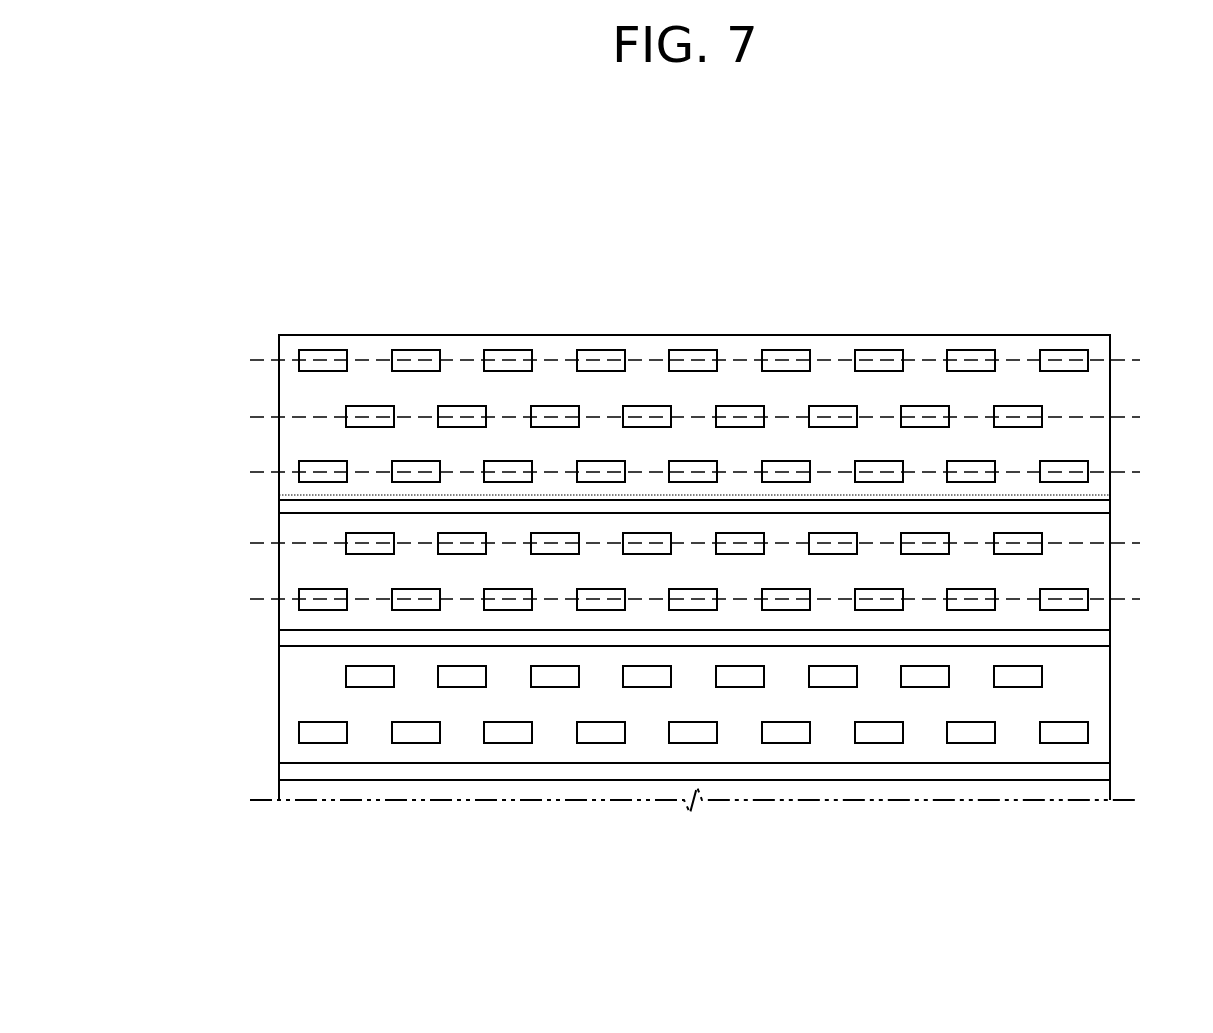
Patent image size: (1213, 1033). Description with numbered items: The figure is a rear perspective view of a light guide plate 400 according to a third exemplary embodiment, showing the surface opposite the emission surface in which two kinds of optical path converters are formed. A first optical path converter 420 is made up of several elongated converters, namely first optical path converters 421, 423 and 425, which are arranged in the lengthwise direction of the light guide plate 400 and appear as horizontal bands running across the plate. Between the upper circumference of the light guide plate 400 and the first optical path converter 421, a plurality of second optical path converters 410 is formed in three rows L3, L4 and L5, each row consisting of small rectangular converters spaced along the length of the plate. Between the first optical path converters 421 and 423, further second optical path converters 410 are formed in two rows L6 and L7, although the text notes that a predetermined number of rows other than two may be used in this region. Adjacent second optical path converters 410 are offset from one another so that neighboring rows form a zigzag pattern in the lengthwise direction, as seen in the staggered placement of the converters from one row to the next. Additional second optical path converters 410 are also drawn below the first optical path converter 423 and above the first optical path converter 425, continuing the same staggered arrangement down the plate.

The light guide plate 400 is at (1059, 300).
The second optical path converter 410 is at (329, 462).
The first optical path converter 420 is at (186, 510).
The first optical path converter 421 is at (285, 503).
The first optical path converter 423 is at (285, 637).
The first optical path converter 425 is at (285, 770).
The row L3 is at (1128, 360).
The row L4 is at (1128, 417).
The row L5 is at (1128, 472).
The row L6 is at (1128, 543).
The row L7 is at (1128, 599).